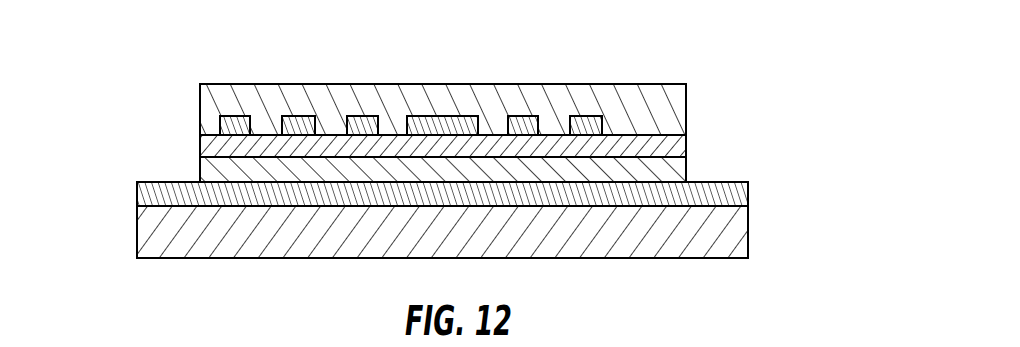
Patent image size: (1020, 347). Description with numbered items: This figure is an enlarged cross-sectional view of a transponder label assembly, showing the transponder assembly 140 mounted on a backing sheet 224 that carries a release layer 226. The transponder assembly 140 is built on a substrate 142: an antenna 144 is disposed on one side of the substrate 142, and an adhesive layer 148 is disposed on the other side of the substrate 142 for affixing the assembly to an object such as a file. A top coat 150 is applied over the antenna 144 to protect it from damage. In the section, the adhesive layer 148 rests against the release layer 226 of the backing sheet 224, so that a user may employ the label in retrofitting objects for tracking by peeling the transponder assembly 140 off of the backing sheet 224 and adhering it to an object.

The transponder assembly 140 is at (443, 116).
The substrate 142 is at (687, 142).
The antenna 144 is at (297, 116).
The adhesive layer 148 is at (687, 172).
The top coat 150 is at (653, 85).
The backing sheet 224 is at (748, 233).
The release layer 226 is at (748, 193).